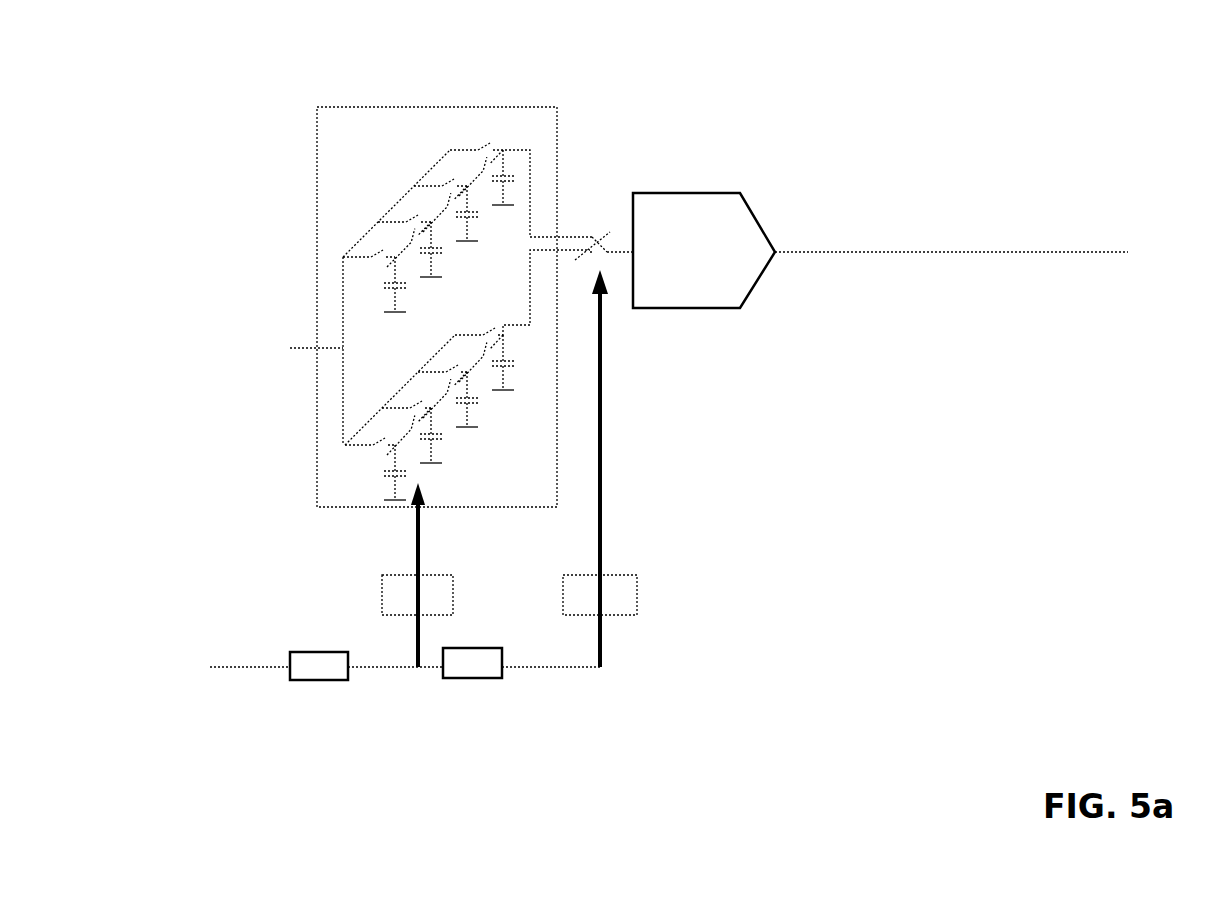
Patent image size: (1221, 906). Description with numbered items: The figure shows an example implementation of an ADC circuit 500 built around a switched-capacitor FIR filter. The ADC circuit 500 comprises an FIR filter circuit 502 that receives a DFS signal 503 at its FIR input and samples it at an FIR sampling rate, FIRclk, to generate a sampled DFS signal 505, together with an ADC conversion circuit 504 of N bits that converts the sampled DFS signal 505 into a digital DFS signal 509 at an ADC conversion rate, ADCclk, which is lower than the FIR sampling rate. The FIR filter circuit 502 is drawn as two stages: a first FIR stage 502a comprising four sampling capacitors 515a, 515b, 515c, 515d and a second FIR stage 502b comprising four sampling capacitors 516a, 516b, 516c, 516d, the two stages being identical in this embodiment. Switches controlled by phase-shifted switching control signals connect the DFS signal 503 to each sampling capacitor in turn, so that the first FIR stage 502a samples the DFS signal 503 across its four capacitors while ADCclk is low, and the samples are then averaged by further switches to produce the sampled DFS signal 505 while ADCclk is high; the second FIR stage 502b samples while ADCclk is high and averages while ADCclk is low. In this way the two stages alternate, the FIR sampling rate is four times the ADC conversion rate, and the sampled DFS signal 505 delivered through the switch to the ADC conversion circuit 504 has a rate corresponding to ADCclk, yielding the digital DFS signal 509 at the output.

The ADC circuit 500 is at (769, 61).
The FIR filter circuit 502 is at (390, 85).
The first FIR stage 502a is at (412, 157).
The second FIR stage 502b is at (464, 467).
The DFS signal 503 is at (239, 302).
The ADC conversion circuit 504 is at (693, 169).
The sampled DFS signal 505 is at (625, 226).
The digital DFS signal 509 is at (915, 187).
The sampling capacitor 515a is at (519, 177).
The sampling capacitor 515b is at (482, 213).
The sampling capacitor 515c is at (451, 249).
The sampling capacitor 515d is at (415, 284).
The sampling capacitor 516a is at (525, 362).
The sampling capacitor 516b is at (486, 399).
The sampling capacitor 516c is at (456, 435).
The sampling capacitor 516d is at (419, 472).